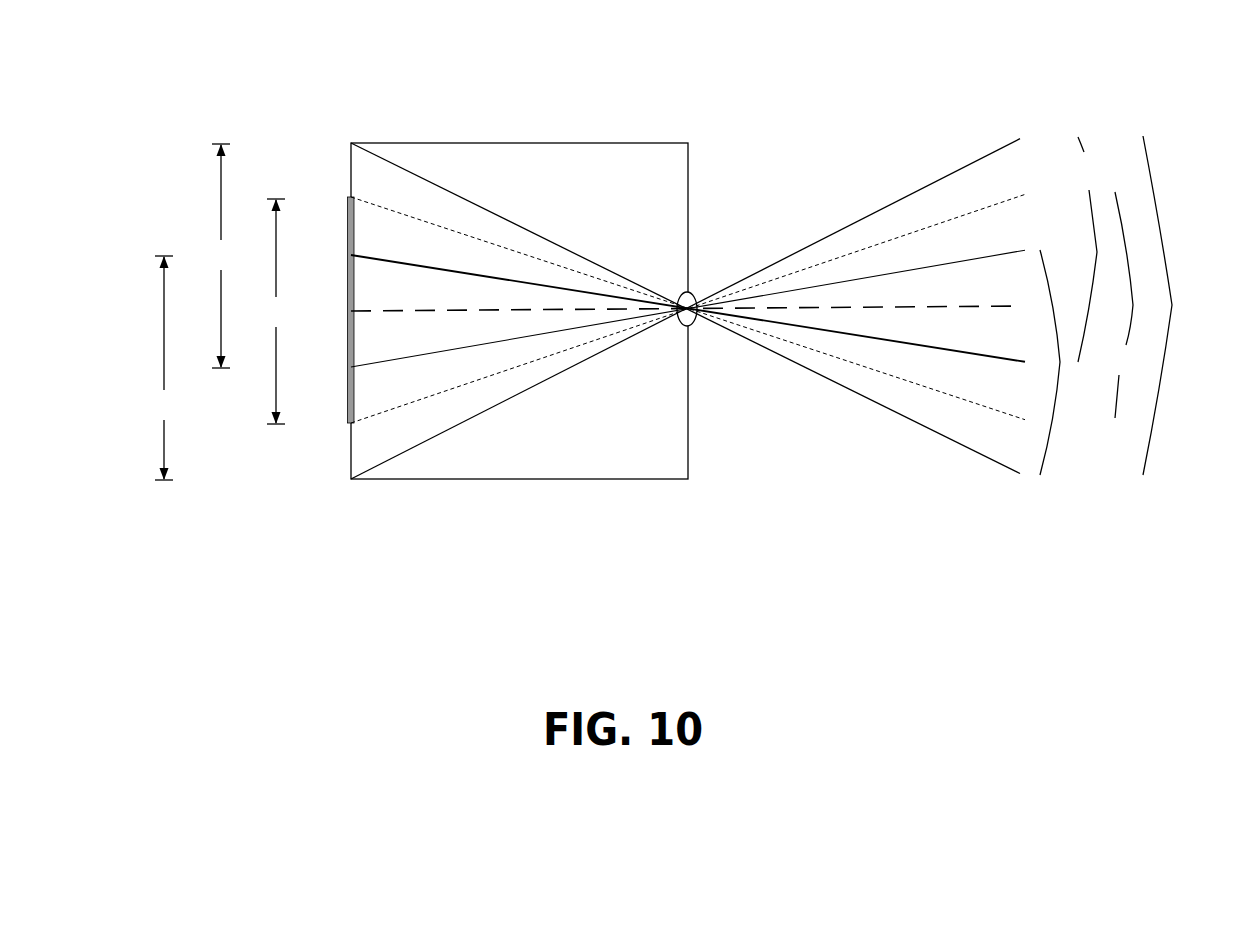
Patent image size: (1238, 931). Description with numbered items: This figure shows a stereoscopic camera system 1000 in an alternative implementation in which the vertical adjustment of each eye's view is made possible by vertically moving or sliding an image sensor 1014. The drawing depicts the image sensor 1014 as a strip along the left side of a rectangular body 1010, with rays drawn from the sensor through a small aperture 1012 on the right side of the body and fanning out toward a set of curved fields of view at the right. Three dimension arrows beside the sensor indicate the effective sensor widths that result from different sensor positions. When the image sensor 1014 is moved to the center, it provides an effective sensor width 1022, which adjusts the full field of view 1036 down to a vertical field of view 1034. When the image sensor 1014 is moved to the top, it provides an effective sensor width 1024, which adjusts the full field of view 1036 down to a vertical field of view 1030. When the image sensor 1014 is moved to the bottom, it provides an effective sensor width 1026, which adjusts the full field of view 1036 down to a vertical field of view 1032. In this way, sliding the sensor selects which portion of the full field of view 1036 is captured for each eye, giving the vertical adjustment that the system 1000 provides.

The stereoscopic camera system 1000 is at (657, 90).
The housing / optical body 1010 is at (519, 311).
The aperture 1012 is at (694, 326).
The image sensor 1014 is at (345, 413).
The effective sensor width 1022 is at (276, 311).
The effective sensor width 1024 is at (219, 256).
The effective sensor width 1026 is at (164, 368).
The vertical field of view 1030 is at (1061, 362).
The vertical field of view 1032 is at (1080, 249).
The vertical field of view 1034 is at (1125, 305).
The full field of view 1036 is at (1186, 305).